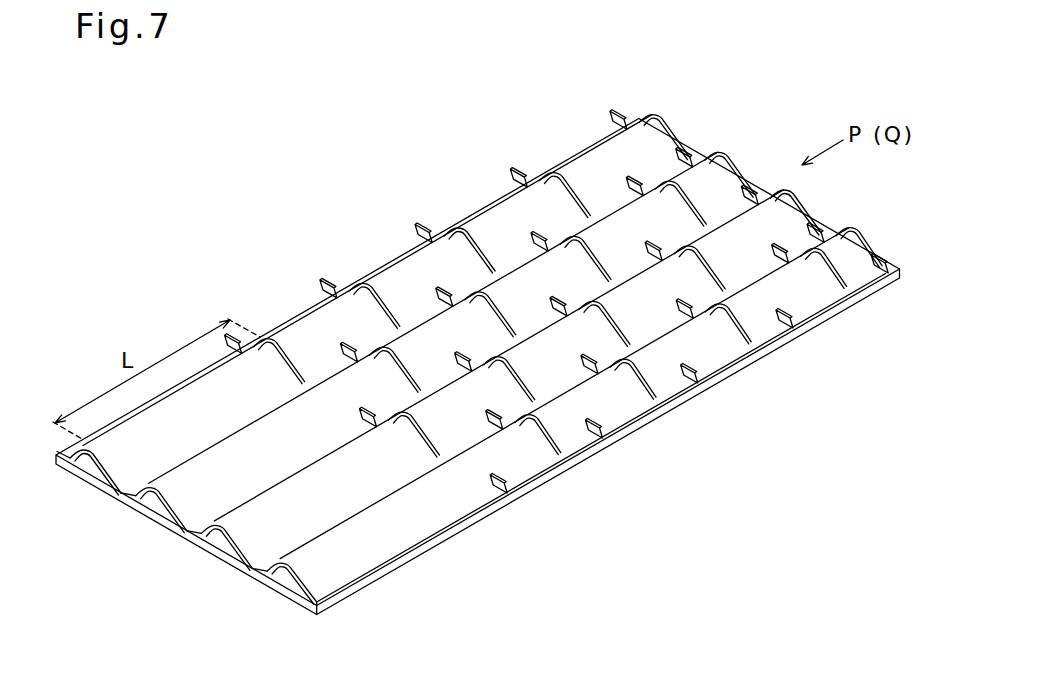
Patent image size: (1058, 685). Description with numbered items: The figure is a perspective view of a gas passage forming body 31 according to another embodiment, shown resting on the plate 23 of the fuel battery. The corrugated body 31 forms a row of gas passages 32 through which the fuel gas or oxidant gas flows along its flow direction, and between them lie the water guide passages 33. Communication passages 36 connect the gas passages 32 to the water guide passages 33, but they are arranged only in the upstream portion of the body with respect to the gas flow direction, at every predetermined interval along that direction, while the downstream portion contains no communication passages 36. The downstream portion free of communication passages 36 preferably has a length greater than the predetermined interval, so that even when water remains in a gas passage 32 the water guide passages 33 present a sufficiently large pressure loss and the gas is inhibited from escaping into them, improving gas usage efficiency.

The plate (tube / flat tube wall) 23 is at (382, 578).
The gas passage forming body 31 is at (472, 349).
The gas passage 32 is at (641, 150).
The water guide passage 33 is at (280, 575).
The communication passage 36 is at (750, 357).